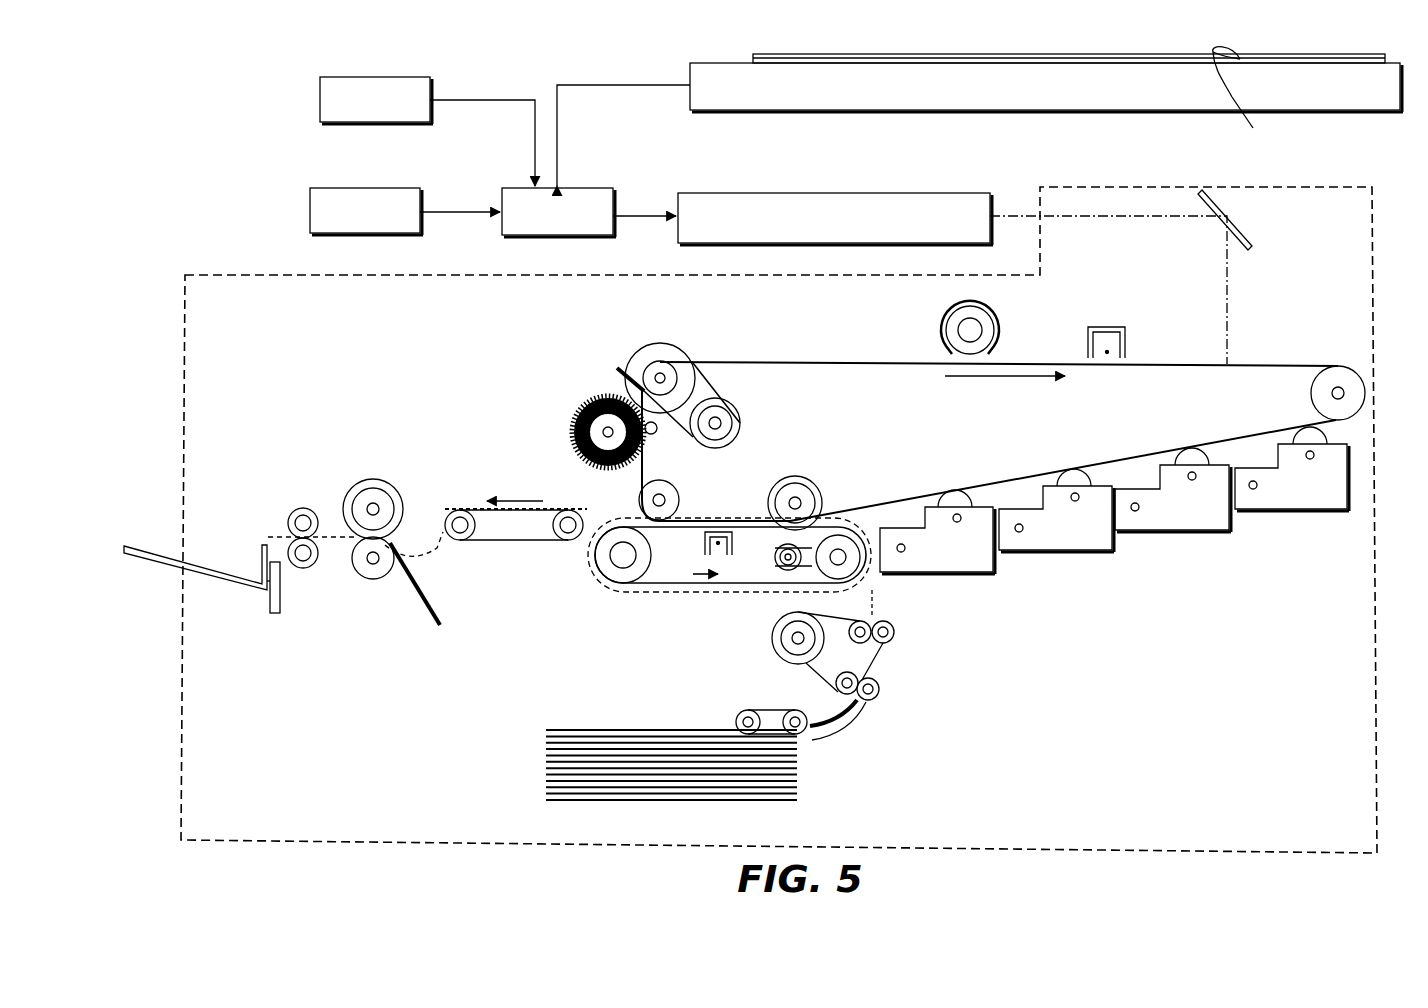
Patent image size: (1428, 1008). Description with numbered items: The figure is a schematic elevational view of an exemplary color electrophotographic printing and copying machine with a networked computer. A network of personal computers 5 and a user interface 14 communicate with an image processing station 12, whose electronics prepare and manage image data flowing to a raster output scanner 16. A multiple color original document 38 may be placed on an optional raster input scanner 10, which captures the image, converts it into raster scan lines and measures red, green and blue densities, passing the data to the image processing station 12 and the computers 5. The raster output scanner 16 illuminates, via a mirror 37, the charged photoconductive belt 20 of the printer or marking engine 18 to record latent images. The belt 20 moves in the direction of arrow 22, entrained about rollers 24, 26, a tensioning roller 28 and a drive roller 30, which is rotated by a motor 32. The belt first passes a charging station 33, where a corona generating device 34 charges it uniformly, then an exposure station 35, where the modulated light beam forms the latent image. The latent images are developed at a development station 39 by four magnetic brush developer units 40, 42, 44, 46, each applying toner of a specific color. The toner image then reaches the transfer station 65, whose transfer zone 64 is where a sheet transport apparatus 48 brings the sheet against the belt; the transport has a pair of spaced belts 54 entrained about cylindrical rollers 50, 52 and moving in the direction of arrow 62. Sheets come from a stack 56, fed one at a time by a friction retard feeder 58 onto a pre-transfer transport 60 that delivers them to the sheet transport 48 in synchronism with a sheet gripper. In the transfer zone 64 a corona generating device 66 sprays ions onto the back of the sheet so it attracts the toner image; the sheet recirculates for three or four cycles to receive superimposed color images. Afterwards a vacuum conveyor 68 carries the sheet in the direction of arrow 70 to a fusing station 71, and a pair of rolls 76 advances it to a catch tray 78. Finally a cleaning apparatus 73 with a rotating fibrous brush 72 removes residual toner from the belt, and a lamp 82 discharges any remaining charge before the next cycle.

The personal computer network 5 is at (290, 93).
The raster input scanner 10 is at (675, 72).
The image processing station 12 is at (614, 181).
The user interface 14 is at (305, 176).
The raster output scanner 16 is at (872, 184).
The marking engine 18 is at (1377, 168).
The photoconductive belt 20 is at (1050, 360).
The arrow 22 is at (1010, 381).
The belt roller 24 is at (673, 491).
The roller 26 is at (816, 493).
The tensioning roller 28 is at (1342, 378).
The drive roller 30 is at (643, 358).
The motor 32 is at (740, 421).
The charging station 33 is at (1142, 352).
The corona generating device 34 is at (1117, 325).
The exposure station 35 is at (1243, 355).
The mirror 37 is at (1254, 237).
The original document 38 is at (1242, 101).
The development station 39 is at (1114, 535).
The developer unit 40 is at (1310, 502).
The developer unit 42 is at (1188, 520).
The developer unit 44 is at (1068, 544).
The developer unit 46 is at (952, 566).
The sheet transport apparatus 48 is at (752, 571).
The roller 50 is at (617, 578).
The transfer belt roller 52 is at (848, 568).
The belts 54 is at (630, 520).
The stack of sheets 56 is at (576, 736).
The friction retard feeder 58 is at (775, 708).
The pre-transfer transport 60 is at (865, 663).
The arrow 62 is at (706, 580).
The transfer zone 64 is at (726, 512).
The transfer station 65 is at (743, 538).
The corona generating device 66 is at (703, 549).
The vacuum conveyor 68 is at (513, 543).
The arrow 70 is at (515, 500).
The fusing station 71 is at (368, 480).
The fibrous brush 72 is at (582, 418).
The photoreceptor cleaning apparatus 73 is at (593, 379).
The pair of rolls 76 is at (304, 508).
The catch tray 78 is at (233, 580).
The lamp 82 is at (940, 330).